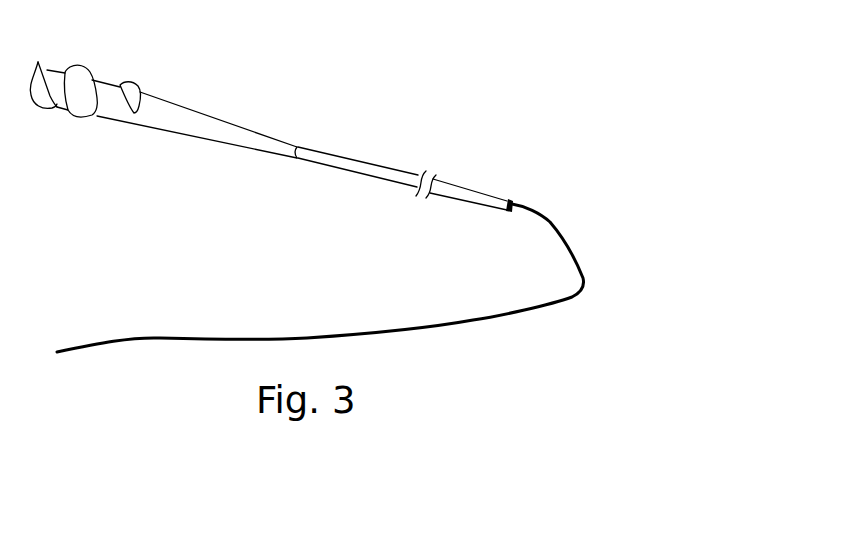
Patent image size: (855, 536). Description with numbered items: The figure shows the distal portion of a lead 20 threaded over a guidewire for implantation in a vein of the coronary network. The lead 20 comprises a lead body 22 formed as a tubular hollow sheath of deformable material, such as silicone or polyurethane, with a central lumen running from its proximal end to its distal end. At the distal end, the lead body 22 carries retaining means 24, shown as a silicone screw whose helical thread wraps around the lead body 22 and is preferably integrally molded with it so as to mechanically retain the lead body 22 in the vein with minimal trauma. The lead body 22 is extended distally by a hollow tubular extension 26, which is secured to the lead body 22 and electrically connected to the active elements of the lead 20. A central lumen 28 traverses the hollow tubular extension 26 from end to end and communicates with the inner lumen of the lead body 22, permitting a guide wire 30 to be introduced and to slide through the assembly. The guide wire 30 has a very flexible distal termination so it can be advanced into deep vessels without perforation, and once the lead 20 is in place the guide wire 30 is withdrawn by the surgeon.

The lead 20 is at (390, 92).
The lead body 22 is at (195, 129).
The retaining means 24 is at (82, 67).
The hollow tubular extension 26 is at (358, 173).
The central lumen 28 is at (508, 209).
The guide wire 30 is at (437, 330).